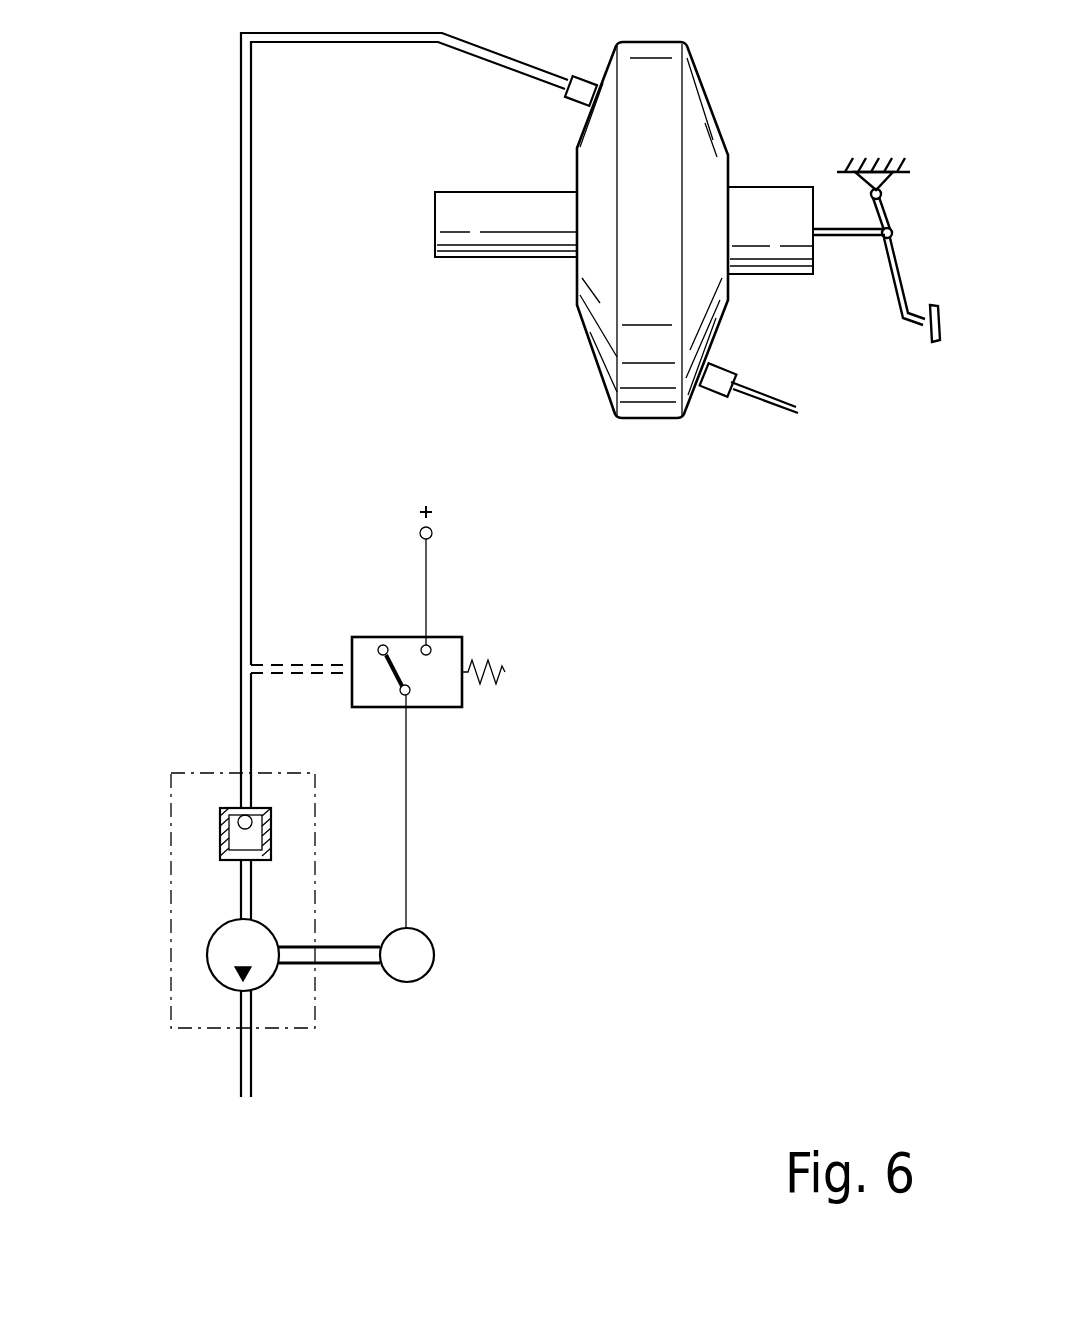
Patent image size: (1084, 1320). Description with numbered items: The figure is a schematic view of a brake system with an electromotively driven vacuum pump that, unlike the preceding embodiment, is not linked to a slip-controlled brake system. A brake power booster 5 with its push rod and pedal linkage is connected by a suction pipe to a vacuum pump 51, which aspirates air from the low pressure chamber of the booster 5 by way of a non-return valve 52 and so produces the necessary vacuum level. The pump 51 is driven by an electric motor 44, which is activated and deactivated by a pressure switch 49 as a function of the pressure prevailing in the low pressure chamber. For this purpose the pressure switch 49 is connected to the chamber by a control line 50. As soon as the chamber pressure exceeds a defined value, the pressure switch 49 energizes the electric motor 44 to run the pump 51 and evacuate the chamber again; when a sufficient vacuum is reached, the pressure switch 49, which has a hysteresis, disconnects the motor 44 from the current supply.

The brake power booster 5 is at (726, 68).
The electric motor 44 is at (435, 955).
The pressure switch 49 is at (400, 640).
The control line 50 is at (281, 664).
The vacuum pump 51 is at (207, 954).
The non-return valve 52 is at (220, 830).